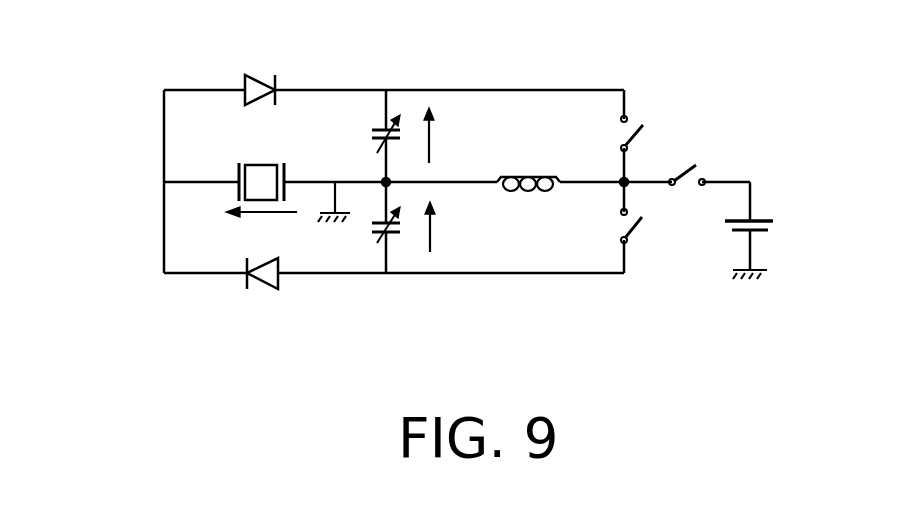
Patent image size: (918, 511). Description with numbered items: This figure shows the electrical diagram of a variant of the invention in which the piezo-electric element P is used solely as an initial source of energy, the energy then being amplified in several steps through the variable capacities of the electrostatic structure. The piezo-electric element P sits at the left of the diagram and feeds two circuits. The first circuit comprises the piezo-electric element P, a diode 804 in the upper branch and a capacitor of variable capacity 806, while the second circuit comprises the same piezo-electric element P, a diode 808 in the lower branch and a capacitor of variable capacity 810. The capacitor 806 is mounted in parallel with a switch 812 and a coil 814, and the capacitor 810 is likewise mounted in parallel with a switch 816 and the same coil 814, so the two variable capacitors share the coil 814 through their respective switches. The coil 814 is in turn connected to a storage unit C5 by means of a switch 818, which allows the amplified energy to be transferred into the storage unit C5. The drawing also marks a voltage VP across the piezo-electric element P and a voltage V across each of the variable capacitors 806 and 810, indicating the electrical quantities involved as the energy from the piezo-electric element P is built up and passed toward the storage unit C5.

The diode 804 is at (268, 80).
The capacitor of variable capacity 806 is at (407, 130).
The diode 808 is at (265, 287).
The capacitor of variable capacity 810 is at (403, 232).
The switch 812 is at (632, 120).
The coil 814 is at (533, 177).
The switch 816 is at (632, 237).
The switch 818 is at (700, 167).
The storage unit C5 is at (770, 226).
The piezo-electric element P is at (262, 168).
The voltage across variable capacitor V is at (440, 180).
The piezoelectric element voltage VP is at (261, 229).